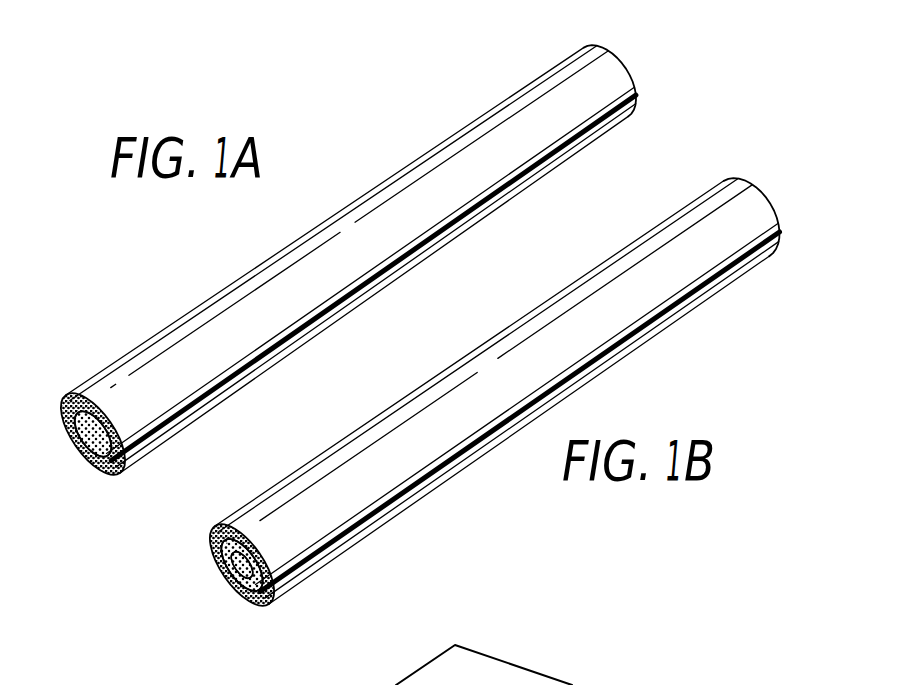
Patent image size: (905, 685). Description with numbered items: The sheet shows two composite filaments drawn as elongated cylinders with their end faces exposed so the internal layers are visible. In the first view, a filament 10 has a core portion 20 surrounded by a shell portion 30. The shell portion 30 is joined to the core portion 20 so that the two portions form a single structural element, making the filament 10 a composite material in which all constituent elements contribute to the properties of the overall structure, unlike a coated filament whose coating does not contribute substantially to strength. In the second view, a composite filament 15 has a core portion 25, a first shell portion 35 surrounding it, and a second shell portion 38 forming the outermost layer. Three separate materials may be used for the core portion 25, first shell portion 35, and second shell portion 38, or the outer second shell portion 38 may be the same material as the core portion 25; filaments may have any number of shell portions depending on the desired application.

In FIG. 1A, the filament 10 is at (195, 295).
In FIG. 1A, the core portion 20 is at (97, 442).
In FIG. 1A, the shell portion 30 is at (62, 410).
In FIG. 1B, the composite filament 15 is at (348, 432).
In FIG. 1B, the core portion 25 is at (240, 569).
In FIG. 1B, the first shell portion 35 is at (238, 591).
In FIG. 1B, the second shell portion 38 is at (217, 550).